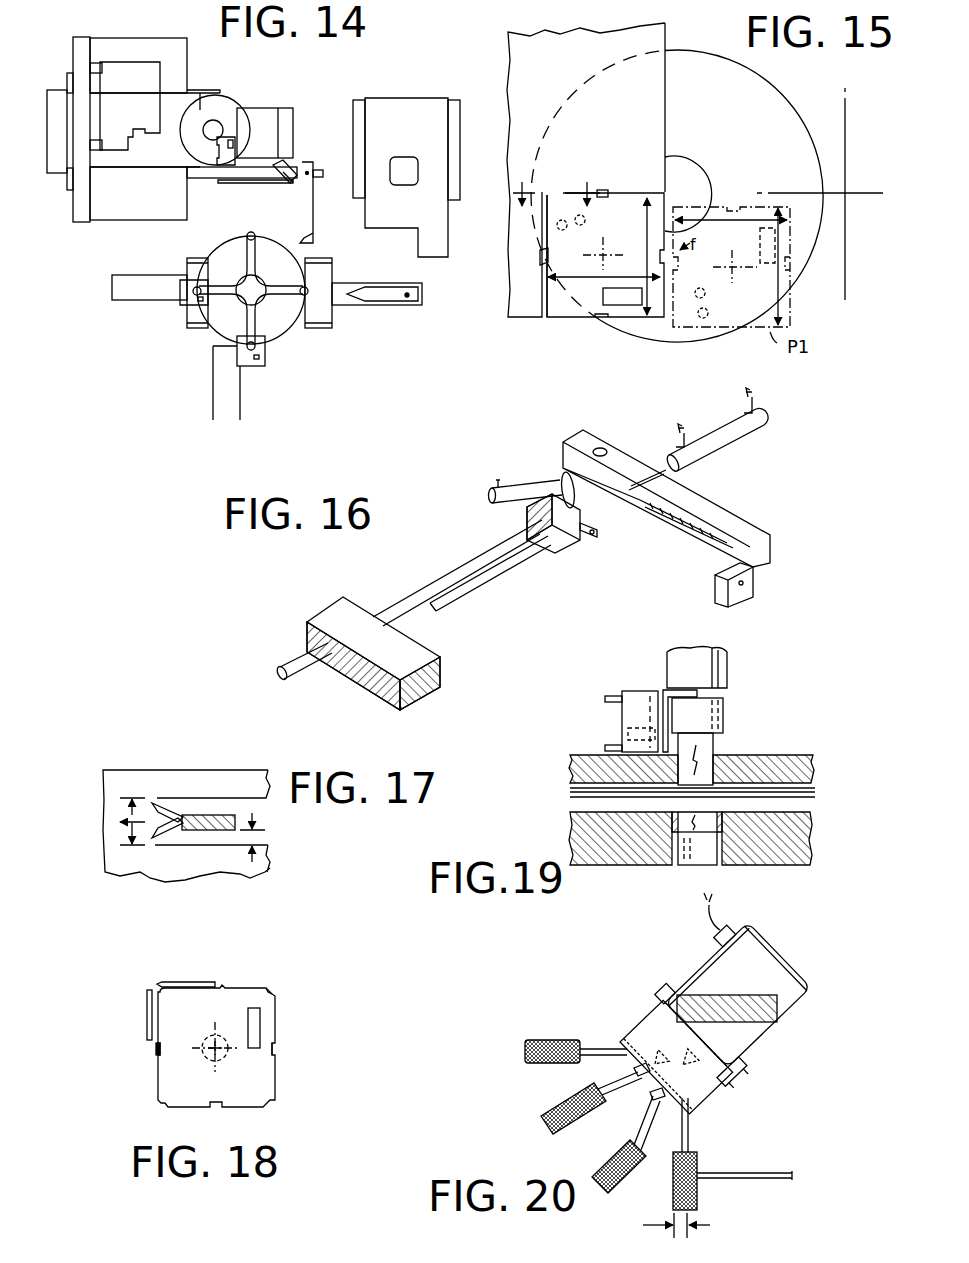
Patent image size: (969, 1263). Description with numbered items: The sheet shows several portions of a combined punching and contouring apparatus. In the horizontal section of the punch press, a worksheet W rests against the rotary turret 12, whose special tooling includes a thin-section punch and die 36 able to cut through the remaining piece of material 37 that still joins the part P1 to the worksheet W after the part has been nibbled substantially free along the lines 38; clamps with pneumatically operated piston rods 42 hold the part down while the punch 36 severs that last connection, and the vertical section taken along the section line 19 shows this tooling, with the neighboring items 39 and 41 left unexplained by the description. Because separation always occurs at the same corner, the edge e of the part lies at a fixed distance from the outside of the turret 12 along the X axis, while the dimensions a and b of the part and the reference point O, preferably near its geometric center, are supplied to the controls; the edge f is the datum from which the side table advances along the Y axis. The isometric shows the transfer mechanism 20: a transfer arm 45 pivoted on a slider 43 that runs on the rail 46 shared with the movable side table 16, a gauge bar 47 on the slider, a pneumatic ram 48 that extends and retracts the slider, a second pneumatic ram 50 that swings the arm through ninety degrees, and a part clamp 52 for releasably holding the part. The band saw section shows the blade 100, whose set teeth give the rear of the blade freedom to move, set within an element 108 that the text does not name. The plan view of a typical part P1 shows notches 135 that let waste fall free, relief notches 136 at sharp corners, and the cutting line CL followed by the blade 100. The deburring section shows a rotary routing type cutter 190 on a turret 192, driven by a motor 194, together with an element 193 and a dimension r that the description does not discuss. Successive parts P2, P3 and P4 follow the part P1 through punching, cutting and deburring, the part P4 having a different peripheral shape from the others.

In FIG. 14, the part P1 is at (412, 158).
In FIG. 15, the part P1 is at (570, 322).
In FIG. 17, the part P1 is at (237, 868).
In FIG. 18, the part P1 is at (272, 1017).
In FIG. 19, the part P1 is at (810, 803).
In FIG. 20, the part P1 is at (768, 1173).
In FIG. 14, the part P2 is at (262, 363).
In FIG. 14, the part P3 is at (183, 306).
In FIG. 14, the part P4 is at (228, 138).
In FIG. 15, the turret 12 is at (784, 98).
In FIG. 16, the movable side table 16 is at (338, 613).
In FIG. 15, the section line 19 is at (559, 181).
In FIG. 16, the transfer mechanism 20 is at (705, 495).
In FIG. 19, the thin-section punch and die 36 is at (724, 714).
In FIG. 15, the remaining piece of material 37 is at (555, 192).
In FIG. 19, the remaining piece of material 37 is at (697, 838).
In FIG. 15, the nibbled edge lines 38 is at (635, 192).
In FIG. 19, the sensor unit 39 is at (642, 697).
In FIG. 19, the thin plate 41 is at (630, 790).
In FIG. 15, the piston rod 42 is at (585, 220).
In FIG. 16, the slider 43 is at (567, 520).
In FIG. 19, the slider 43 is at (630, 803).
In FIG. 16, the transfer arm 45 is at (763, 533).
In FIG. 16, the rail 46 is at (432, 577).
In FIG. 16, the gauge bar 47 is at (500, 572).
In FIG. 16, the pneumatic ram 48 is at (737, 438).
In FIG. 16, the second pneumatic ram 50 is at (523, 487).
In FIG. 16, the part clamp 52 is at (748, 573).
In FIG. 17, the blade 100 is at (193, 832).
In FIG. 18, the blade 100 is at (153, 1048).
In FIG. 17, the jaw block 108 is at (157, 848).
In FIG. 18, the notches 135 is at (276, 1050).
In FIG. 18, the additional notches 136 is at (272, 990).
In FIG. 20, the deburring tool 190 is at (697, 1152).
In FIG. 20, the turret 192 is at (643, 993).
In FIG. 20, the fitting 193 is at (745, 1073).
In FIG. 20, the motor 194 is at (780, 953).
In FIG. 15, the worksheet W is at (520, 323).
In FIG. 15, the X axis X is at (840, 202).
In FIG. 15, the Y axis Y is at (829, 193).
In FIG. 15, the reference point O is at (609, 254).
In FIG. 18, the reference point O is at (220, 1050).
In FIG. 15, the dimension a is at (715, 256).
In FIG. 15, the dimension b is at (664, 266).
In FIG. 15, the edge e is at (543, 238).
In FIG. 15, the edge f is at (613, 192).
In FIG. 20, the dimension r is at (680, 1225).
In FIG. 18, the cutting line CL is at (195, 990).